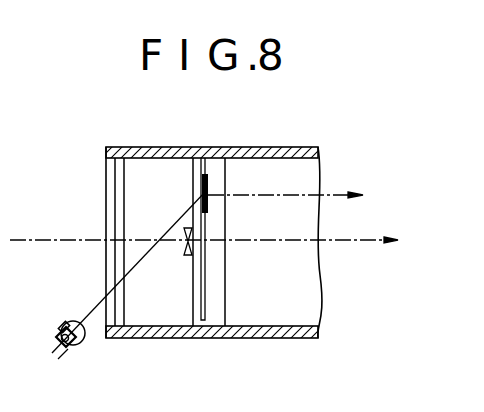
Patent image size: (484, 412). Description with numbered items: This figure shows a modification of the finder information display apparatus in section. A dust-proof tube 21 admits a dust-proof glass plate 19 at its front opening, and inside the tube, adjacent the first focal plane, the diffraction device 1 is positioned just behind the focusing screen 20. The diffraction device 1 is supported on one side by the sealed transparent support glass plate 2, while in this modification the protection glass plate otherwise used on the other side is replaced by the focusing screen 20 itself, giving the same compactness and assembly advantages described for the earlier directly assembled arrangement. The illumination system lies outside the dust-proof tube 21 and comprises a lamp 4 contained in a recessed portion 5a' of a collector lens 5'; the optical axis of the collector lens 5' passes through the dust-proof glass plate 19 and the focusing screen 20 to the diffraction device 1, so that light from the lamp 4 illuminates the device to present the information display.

The diffraction device 1 is at (202, 182).
The support glass plate 2 is at (218, 303).
The lamp 4 is at (70, 352).
The collector lens 5' is at (85, 351).
The recessed portion 5a' is at (58, 309).
The dust-proof glass plate 19 is at (121, 170).
The focusing screen 20 is at (196, 304).
The dust-proof tube 21 is at (282, 148).